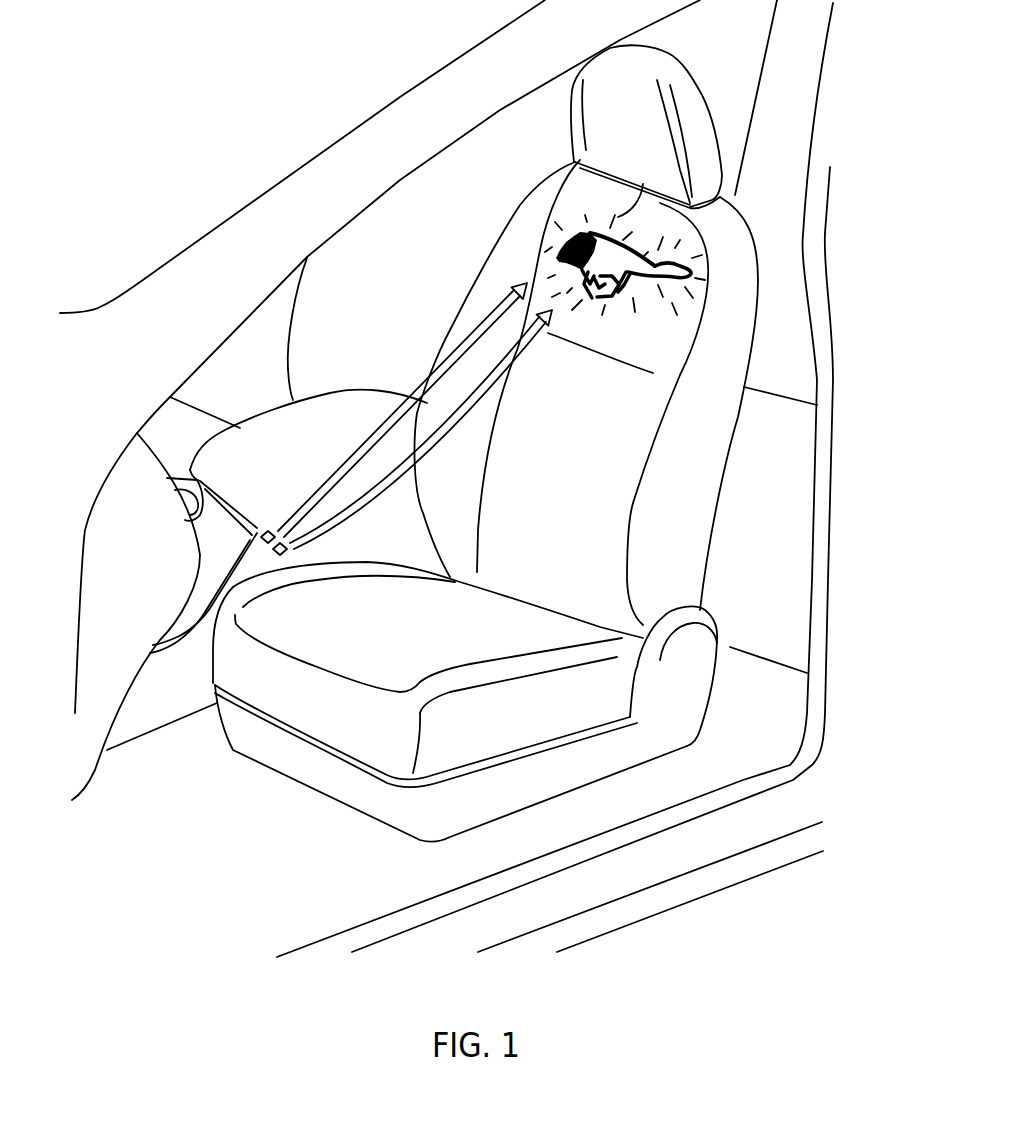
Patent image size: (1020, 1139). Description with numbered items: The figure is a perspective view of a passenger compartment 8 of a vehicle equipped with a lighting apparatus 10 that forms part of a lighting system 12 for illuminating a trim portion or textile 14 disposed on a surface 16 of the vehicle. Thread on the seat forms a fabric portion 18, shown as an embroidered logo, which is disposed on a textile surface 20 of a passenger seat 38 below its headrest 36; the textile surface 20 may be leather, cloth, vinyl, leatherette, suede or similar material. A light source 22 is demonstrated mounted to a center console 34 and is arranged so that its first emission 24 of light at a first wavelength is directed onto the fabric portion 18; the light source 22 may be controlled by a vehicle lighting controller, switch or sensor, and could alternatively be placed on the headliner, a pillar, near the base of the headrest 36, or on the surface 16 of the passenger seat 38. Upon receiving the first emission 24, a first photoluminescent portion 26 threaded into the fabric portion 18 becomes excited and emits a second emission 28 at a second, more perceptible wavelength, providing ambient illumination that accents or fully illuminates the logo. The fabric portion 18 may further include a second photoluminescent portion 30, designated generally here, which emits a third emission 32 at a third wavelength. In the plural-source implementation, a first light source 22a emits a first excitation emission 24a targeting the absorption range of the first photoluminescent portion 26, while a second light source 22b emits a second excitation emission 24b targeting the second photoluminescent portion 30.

The passenger compartment 8 is at (852, 557).
The lighting apparatus 10 is at (351, 468).
The lighting system 12 is at (436, 260).
The trim portion or textile 14 is at (588, 392).
The surface 16 is at (565, 366).
The fabric portion 18 is at (637, 301).
The textile surface 20 is at (528, 545).
The light source 22 is at (253, 565).
The first light source 22a is at (285, 553).
The second light source 22b is at (270, 533).
The first emission 24 is at (411, 416).
The first excitation emission 24a is at (362, 472).
The second excitation emission 24b is at (322, 482).
The first photoluminescent portion 26 is at (584, 270).
The second emission 28 is at (680, 240).
The second photoluminescent portion 30 is at (676, 308).
The third emission 32 is at (674, 295).
The center console 34 is at (272, 423).
The headrest 36 is at (607, 127).
The passenger seat 38 is at (700, 483).